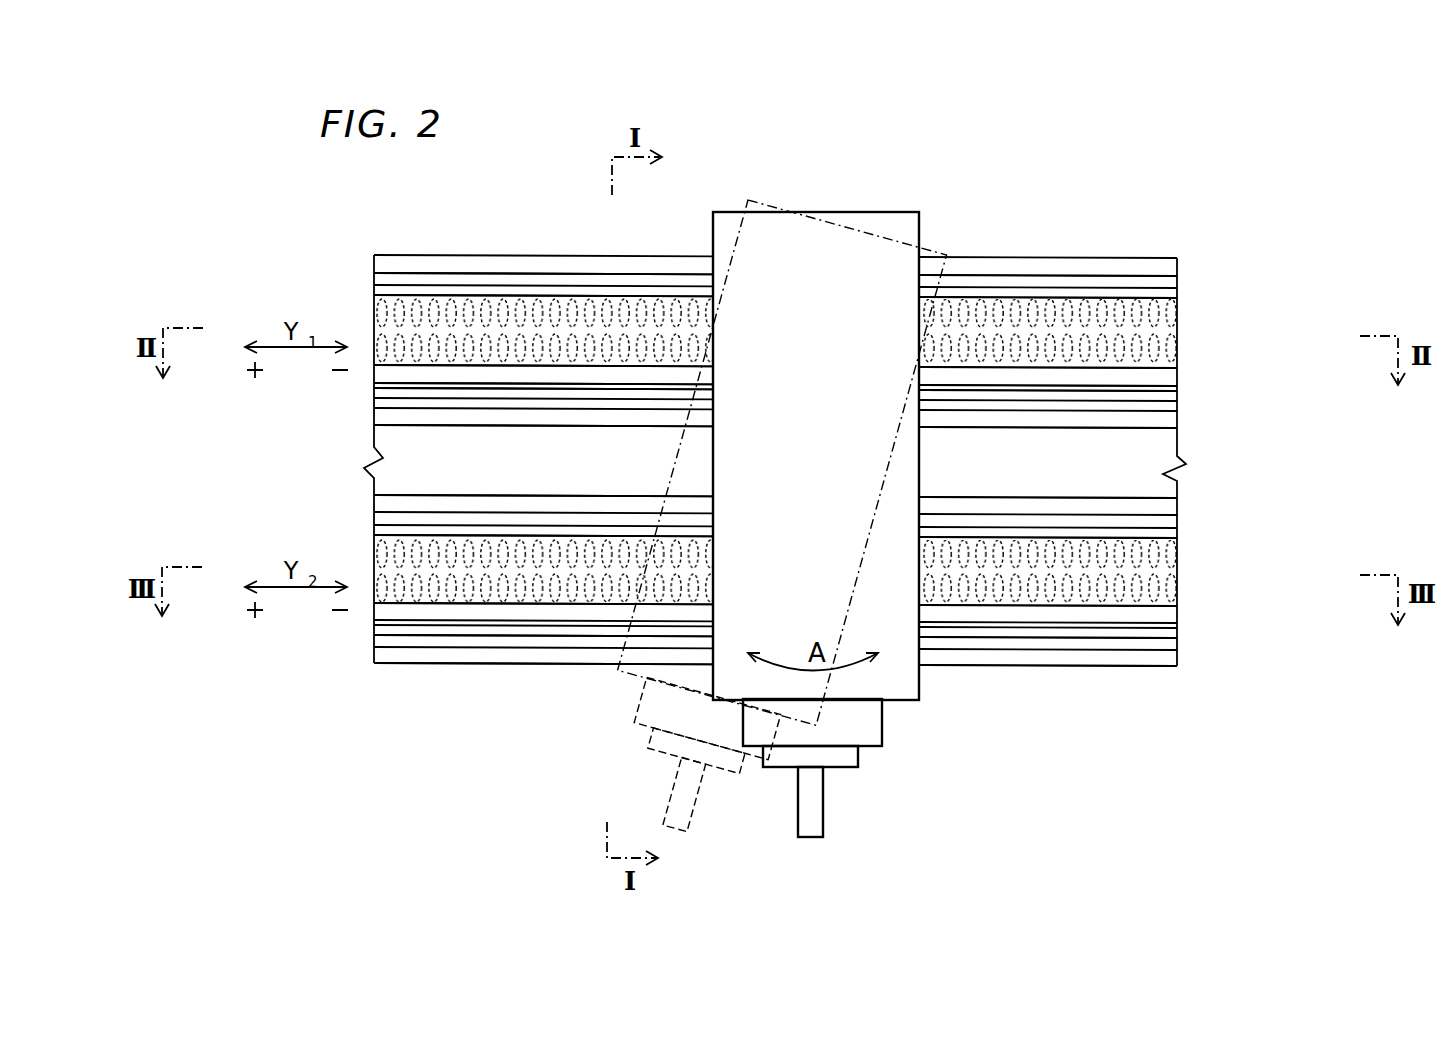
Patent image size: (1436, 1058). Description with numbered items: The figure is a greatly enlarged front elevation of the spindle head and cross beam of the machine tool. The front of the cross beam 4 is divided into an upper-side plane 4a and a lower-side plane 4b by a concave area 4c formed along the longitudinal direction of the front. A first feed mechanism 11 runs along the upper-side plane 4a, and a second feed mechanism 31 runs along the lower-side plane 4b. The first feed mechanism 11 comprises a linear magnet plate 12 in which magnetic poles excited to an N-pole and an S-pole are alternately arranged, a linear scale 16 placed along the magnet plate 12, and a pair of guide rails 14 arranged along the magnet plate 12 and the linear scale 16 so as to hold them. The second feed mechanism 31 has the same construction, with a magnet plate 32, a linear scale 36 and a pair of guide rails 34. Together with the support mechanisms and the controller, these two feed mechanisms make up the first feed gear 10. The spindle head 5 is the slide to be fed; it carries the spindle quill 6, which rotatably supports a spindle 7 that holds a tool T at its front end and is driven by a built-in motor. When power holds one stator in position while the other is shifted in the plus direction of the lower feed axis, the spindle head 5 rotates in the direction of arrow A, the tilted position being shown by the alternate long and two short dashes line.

The cross beam 4 is at (1017, 259).
The upper-side plane 4a is at (1115, 260).
The lower-side plane 4b is at (1107, 668).
The concave area 4c is at (380, 457).
The spindle head 5 is at (865, 216).
The spindle quill 6 is at (873, 723).
The spindle 7 is at (852, 758).
The tool T is at (818, 808).
The first feed gear 10 is at (1378, 457).
The first feed mechanism 11 is at (904, 306).
The linear magnet plate 12 is at (1177, 332).
The guide rails 14 is at (1177, 283).
The linear scale 16 is at (1177, 383).
The second feed mechanism 31 is at (904, 622).
The magnet plate 32 is at (1177, 570).
The guide rails 34 is at (1177, 522).
The linear scale 36 is at (1177, 623).